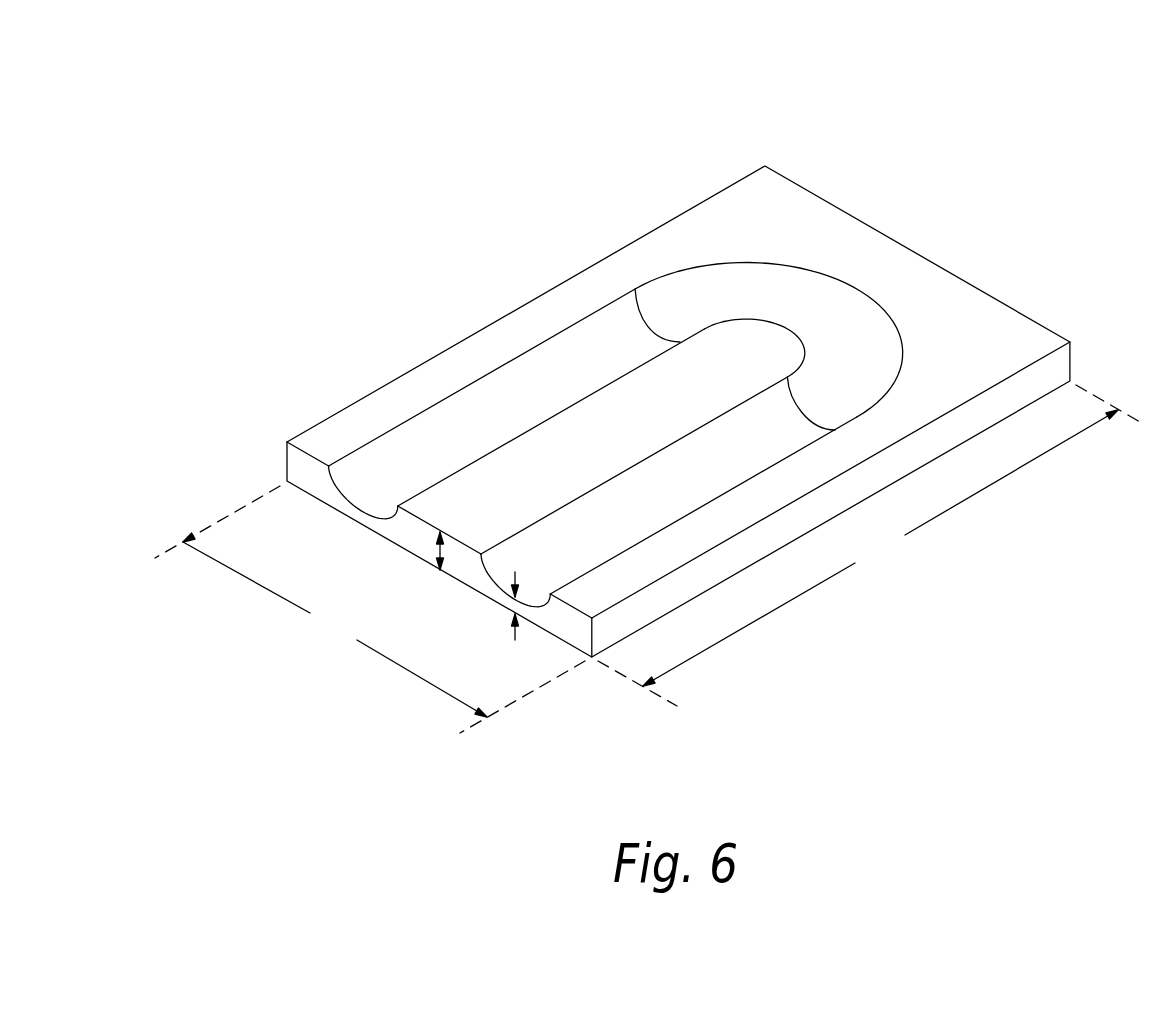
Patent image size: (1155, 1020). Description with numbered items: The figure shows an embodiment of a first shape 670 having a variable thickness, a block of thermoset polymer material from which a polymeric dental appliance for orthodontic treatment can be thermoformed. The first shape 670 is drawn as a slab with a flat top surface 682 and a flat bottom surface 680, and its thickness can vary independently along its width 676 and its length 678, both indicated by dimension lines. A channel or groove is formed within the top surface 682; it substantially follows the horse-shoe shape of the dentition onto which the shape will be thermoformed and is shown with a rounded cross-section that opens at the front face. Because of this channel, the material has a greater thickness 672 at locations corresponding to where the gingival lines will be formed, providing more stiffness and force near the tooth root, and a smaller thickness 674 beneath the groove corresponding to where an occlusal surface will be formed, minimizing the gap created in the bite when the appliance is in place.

The first shape 670 is at (647, 390).
The thickness 672 is at (442, 553).
The thickness 674 is at (515, 637).
The width 676 is at (370, 609).
The length 678 is at (869, 545).
The bottom surface 680 is at (404, 548).
The top surface 682 is at (738, 221).